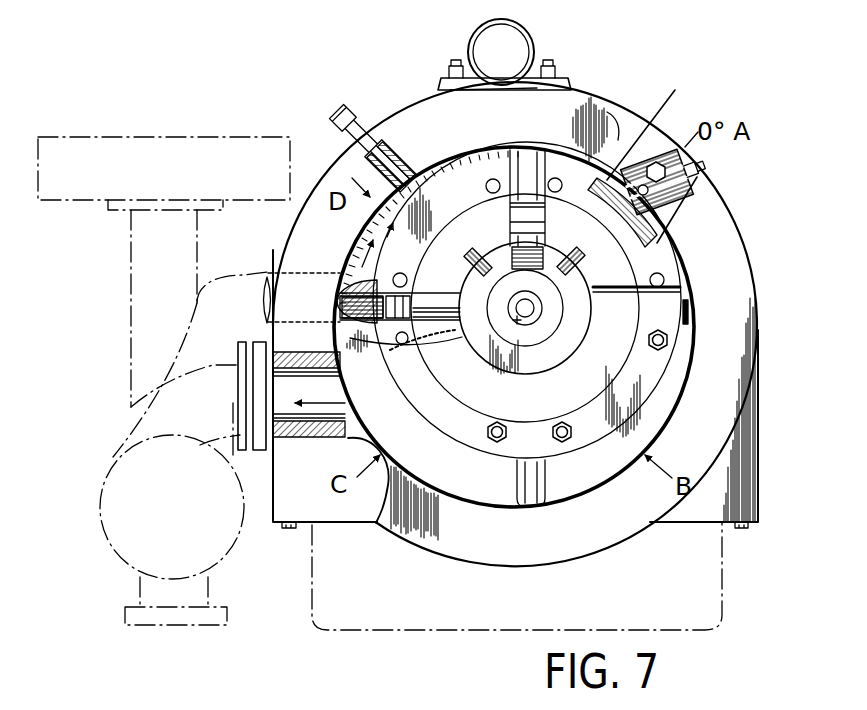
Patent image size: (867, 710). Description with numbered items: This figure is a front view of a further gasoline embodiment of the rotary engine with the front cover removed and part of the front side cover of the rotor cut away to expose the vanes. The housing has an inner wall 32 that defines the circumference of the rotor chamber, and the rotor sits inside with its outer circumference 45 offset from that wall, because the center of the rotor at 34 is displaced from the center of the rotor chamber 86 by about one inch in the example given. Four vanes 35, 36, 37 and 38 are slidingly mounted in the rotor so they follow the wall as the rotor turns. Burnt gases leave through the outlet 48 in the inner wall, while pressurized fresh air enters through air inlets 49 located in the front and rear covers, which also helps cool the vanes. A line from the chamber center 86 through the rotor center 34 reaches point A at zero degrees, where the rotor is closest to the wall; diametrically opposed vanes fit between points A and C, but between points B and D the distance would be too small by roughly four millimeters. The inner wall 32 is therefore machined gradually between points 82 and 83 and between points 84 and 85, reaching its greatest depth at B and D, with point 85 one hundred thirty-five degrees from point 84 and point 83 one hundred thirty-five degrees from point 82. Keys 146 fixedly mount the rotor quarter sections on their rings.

The inner wall 32 is at (427, 170).
The outer circumference of the rotor 45 is at (432, 185).
The point 85 is at (605, 114).
The vane 35 is at (659, 159).
The point 82 is at (668, 250).
The vane 36 is at (693, 323).
The center of the rotor 34 is at (545, 327).
The center of the rotor chamber 86 is at (530, 322).
The keys 146 is at (474, 258).
The vane 38 is at (345, 262).
The air inlets 49 is at (340, 250).
The point 84 is at (285, 390).
The outlet 48 is at (377, 524).
The point 83 is at (437, 497).
The vane 37 is at (550, 483).